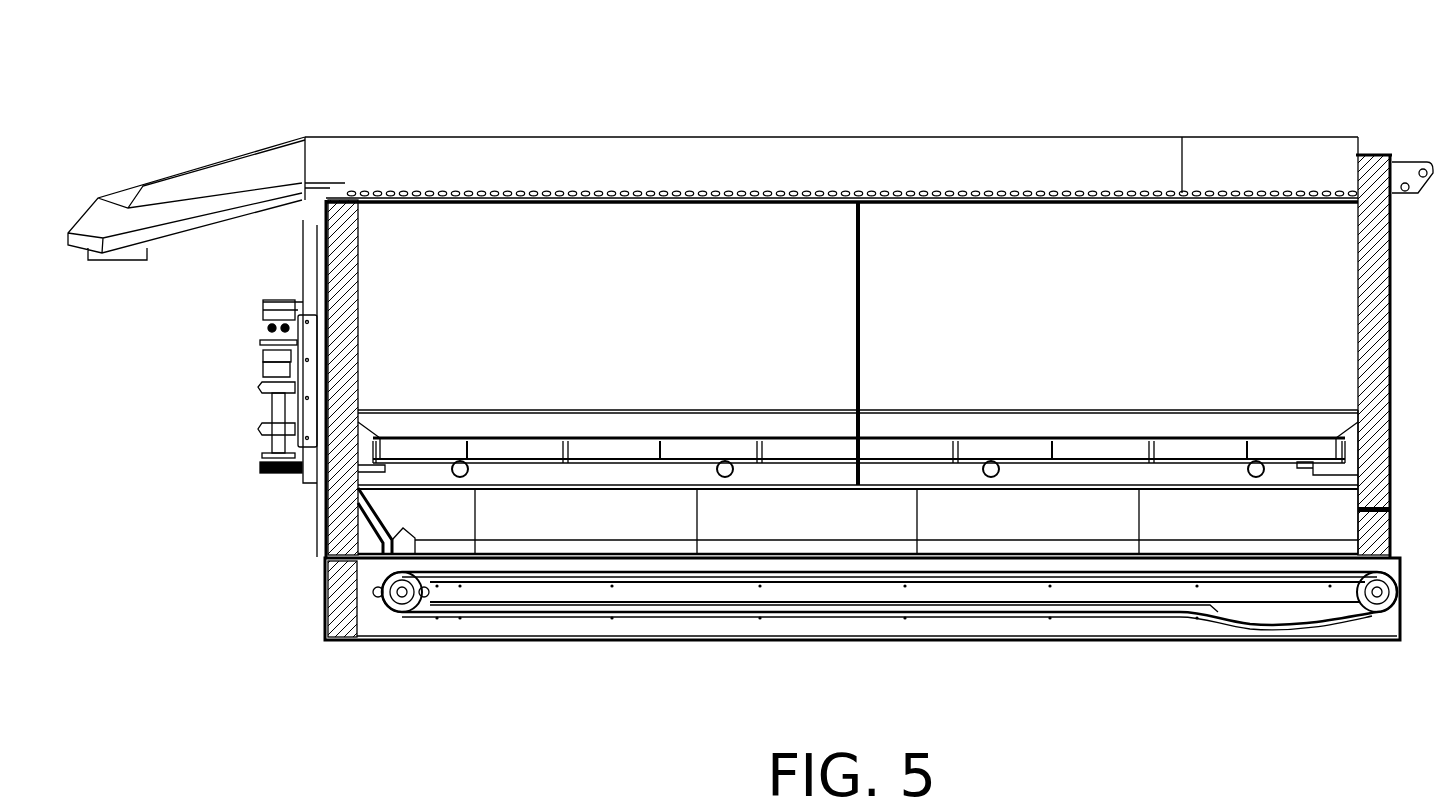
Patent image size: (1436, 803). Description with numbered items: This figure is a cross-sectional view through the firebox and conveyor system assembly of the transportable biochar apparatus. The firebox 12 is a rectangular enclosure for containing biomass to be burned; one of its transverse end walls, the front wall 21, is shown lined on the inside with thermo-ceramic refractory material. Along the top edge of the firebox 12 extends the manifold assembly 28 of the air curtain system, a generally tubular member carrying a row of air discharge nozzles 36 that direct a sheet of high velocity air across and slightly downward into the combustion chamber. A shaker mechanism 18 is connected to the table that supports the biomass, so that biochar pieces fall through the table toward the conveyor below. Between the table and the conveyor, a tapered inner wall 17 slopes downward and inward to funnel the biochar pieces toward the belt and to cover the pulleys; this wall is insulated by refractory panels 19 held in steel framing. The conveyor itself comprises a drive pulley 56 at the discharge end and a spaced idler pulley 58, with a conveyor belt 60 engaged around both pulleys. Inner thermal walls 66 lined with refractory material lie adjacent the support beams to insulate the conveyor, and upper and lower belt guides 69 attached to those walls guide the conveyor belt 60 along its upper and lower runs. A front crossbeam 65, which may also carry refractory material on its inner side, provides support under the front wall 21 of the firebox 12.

The firebox 12 is at (898, 199).
The tapered inner wall 17 is at (642, 497).
The shaker mechanism 18 is at (258, 369).
The refractory panels 19 is at (368, 498).
The front wall 21 is at (342, 270).
The manifold assembly 28 is at (772, 148).
The air discharge nozzles 36 is at (580, 190).
The drive pulley 56 is at (1377, 600).
The idler pulley 58 is at (402, 612).
The conveyor belt 60 is at (1300, 619).
The front crossbeam 65 is at (327, 605).
The inner thermal walls 66 is at (612, 641).
The upper and lower belt guides 69 is at (717, 587).